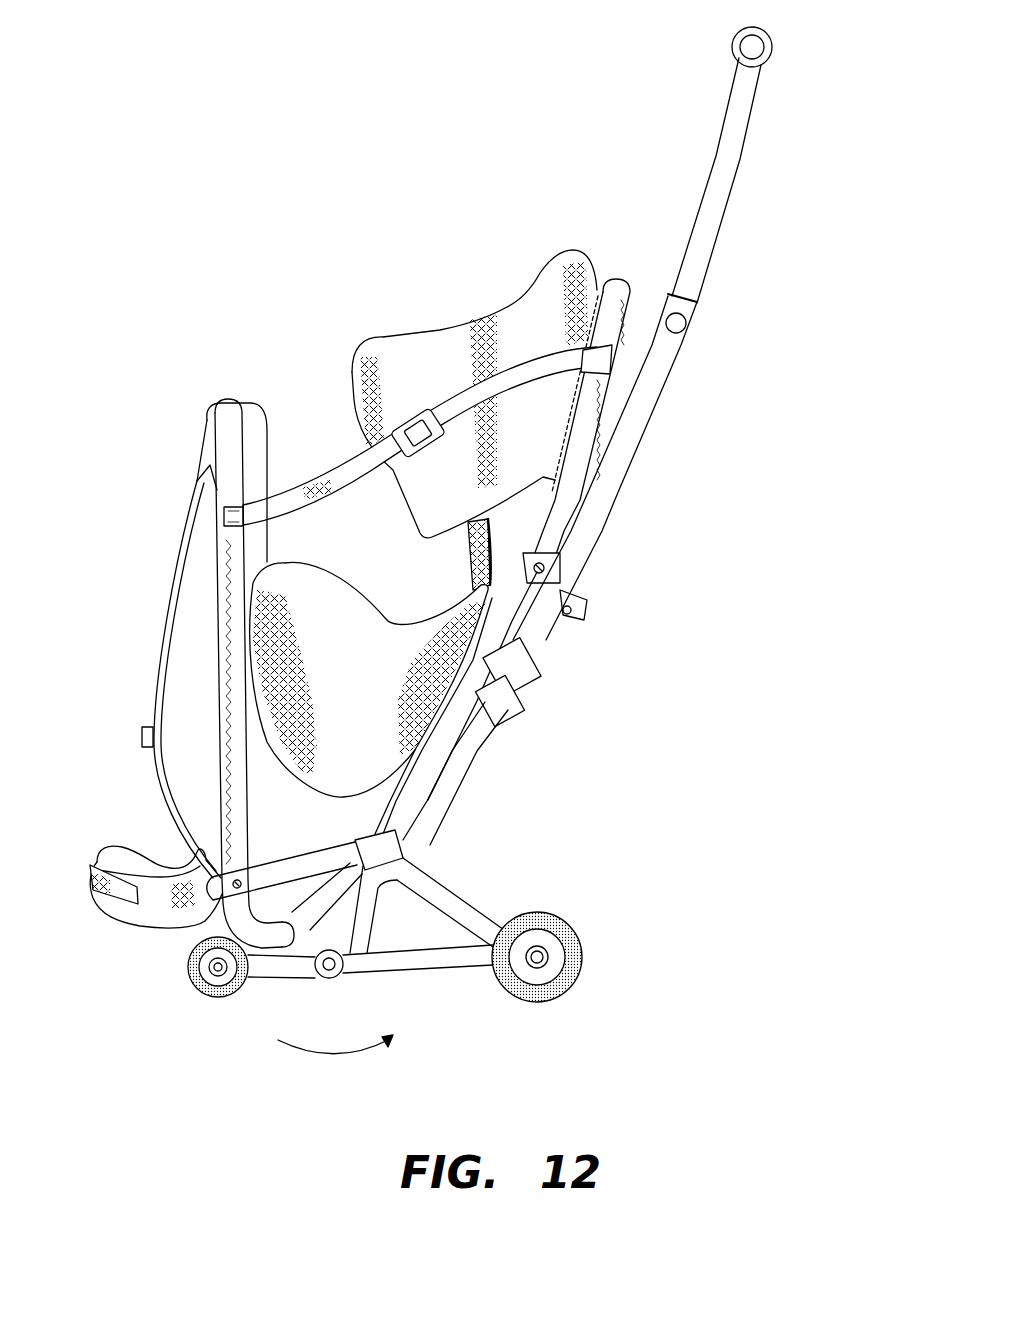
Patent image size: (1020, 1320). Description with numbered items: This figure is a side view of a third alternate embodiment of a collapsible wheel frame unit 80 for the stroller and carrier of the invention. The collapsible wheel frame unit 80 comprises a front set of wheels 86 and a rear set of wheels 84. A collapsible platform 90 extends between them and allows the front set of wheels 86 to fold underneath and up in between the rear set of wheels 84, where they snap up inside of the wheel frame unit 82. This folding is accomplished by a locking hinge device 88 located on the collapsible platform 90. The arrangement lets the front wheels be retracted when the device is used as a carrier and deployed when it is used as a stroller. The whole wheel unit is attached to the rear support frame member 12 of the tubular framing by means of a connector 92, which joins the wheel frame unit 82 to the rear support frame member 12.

The rear support frame member 12 is at (460, 758).
The collapsible wheel frame unit 80 is at (463, 1023).
The wheel frame unit 82 is at (478, 918).
The rear set of wheels 84 is at (558, 994).
The front set of wheels 86 is at (213, 997).
The locking hinge device 88 is at (329, 979).
The collapsible platform 90 is at (423, 963).
The connector 92 is at (380, 850).